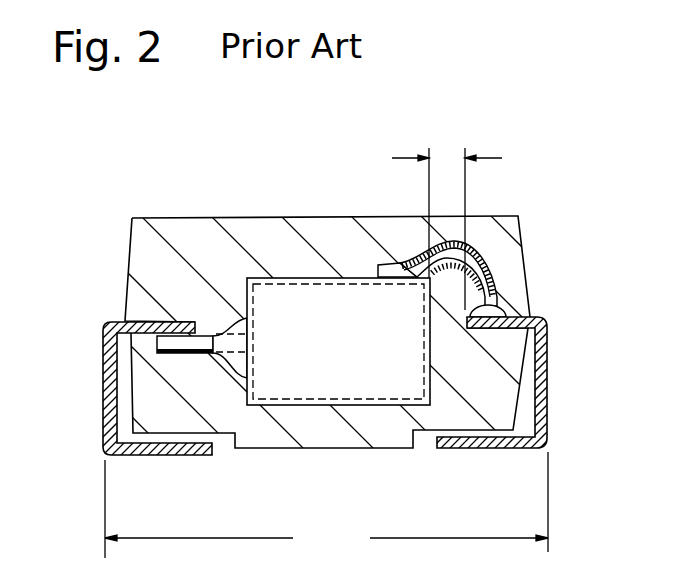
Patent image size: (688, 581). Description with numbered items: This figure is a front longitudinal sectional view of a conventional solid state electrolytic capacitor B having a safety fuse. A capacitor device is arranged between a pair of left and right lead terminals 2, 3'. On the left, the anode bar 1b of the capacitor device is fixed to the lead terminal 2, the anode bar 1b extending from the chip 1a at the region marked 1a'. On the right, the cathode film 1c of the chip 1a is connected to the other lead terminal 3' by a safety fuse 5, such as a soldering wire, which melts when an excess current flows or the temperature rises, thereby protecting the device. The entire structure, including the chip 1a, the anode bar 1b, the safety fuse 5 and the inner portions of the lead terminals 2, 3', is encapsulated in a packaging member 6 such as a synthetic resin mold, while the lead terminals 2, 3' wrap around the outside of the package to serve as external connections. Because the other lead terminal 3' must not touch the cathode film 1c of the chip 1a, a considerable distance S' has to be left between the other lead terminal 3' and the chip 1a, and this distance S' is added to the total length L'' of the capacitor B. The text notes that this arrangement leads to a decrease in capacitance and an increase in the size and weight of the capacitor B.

The solid state electrolytic capacitor having a safety fuse B is at (163, 211).
The packaging member 6 is at (128, 250).
The chip 1a is at (338, 279).
The die pad portion of lead 1a' is at (235, 266).
The anode bar 1b is at (176, 340).
The cathode film 1c is at (349, 277).
The safety fuse 5 is at (484, 268).
The lead terminal 2 is at (105, 343).
The other lead terminal 3' is at (491, 380).
The distance S' is at (447, 220).
The total length L'' is at (326, 505).